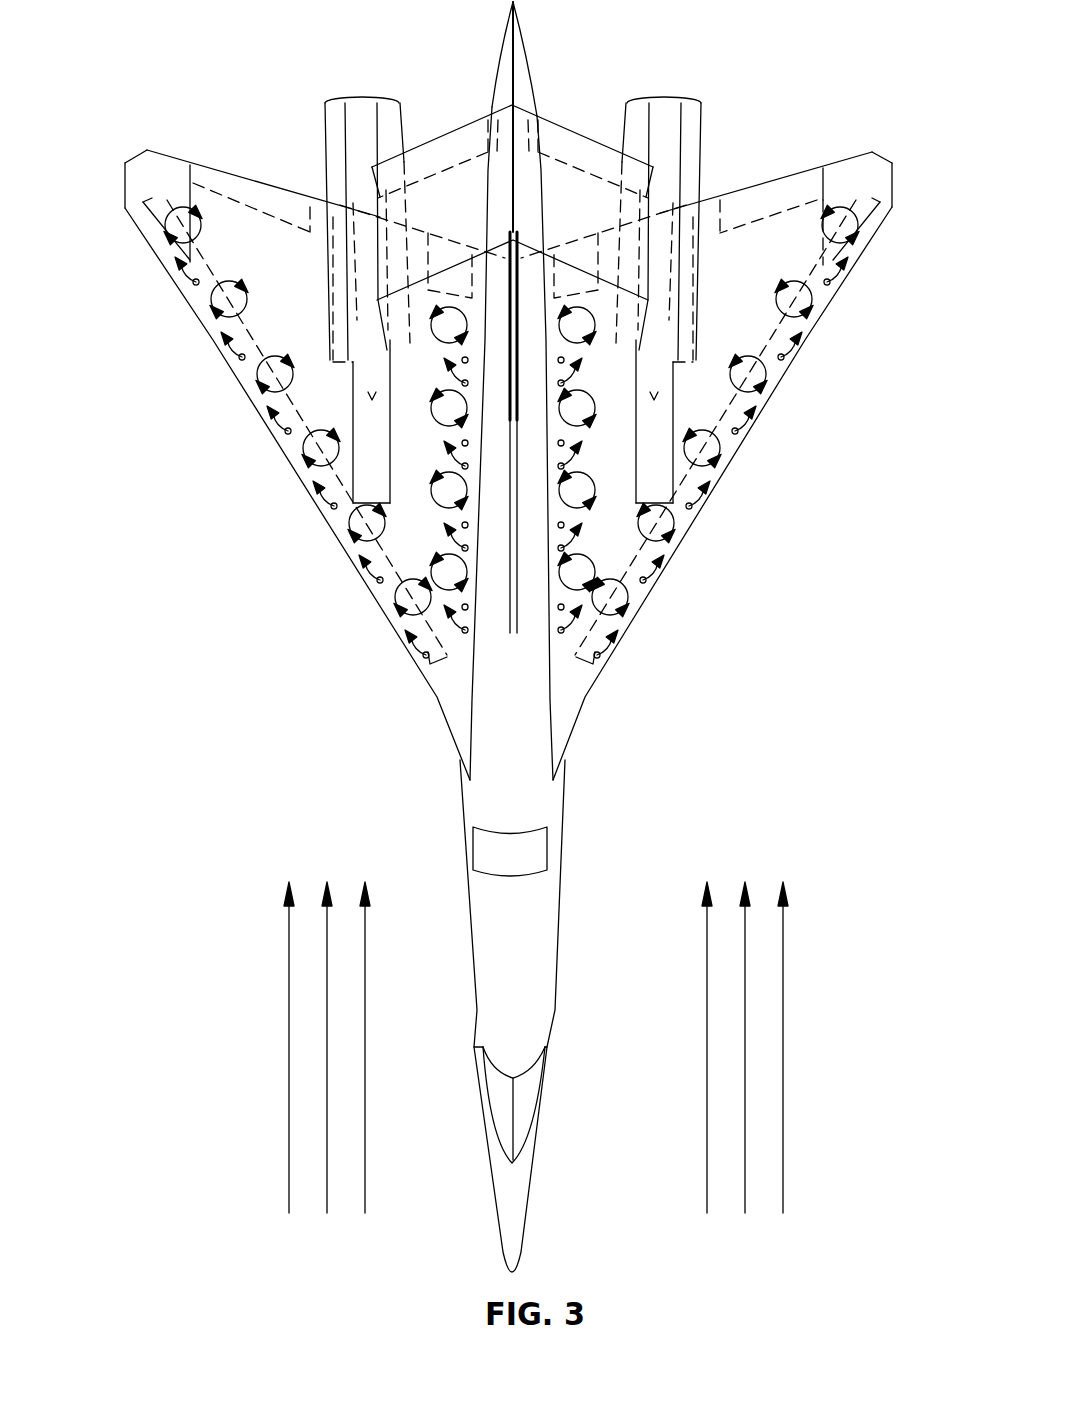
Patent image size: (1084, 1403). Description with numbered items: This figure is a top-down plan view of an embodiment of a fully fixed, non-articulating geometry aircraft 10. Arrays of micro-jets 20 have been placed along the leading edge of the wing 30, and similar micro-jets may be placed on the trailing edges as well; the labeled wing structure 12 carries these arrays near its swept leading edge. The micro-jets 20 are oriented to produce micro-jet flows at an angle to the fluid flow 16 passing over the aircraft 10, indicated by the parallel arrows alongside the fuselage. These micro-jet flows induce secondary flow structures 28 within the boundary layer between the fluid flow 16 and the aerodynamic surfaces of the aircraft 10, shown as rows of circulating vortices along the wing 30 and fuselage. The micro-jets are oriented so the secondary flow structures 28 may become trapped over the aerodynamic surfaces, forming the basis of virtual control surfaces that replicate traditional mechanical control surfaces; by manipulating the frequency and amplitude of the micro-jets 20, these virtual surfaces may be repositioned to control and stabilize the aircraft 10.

The aircraft 10 is at (282, 440).
The wing 12 is at (337, 517).
The fluid flow 16 is at (503, 1042).
The micro-jets 20 is at (511, 439).
The secondary flow structures 28 is at (442, 575).
The wing 30 is at (127, 170).